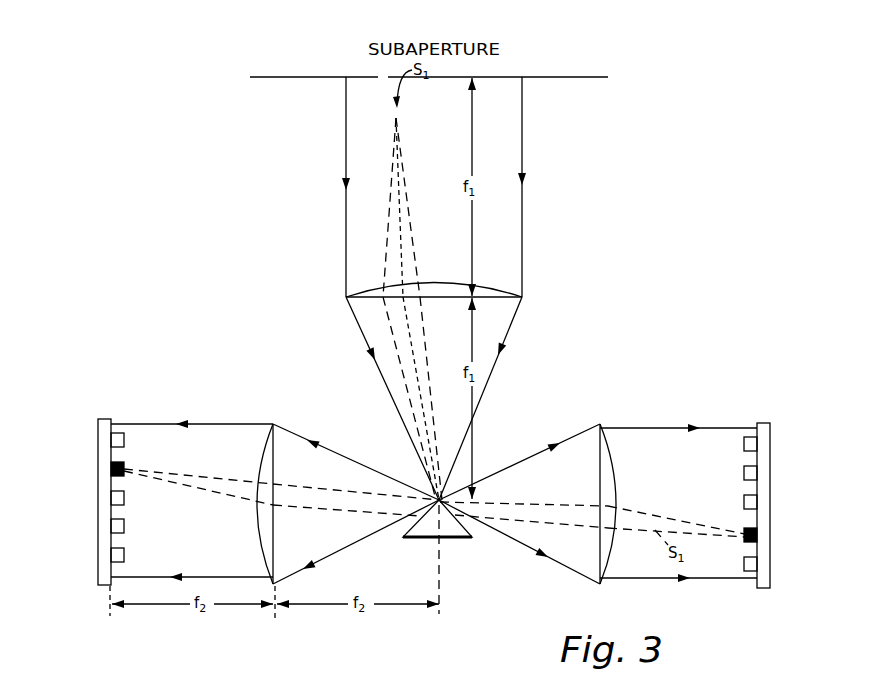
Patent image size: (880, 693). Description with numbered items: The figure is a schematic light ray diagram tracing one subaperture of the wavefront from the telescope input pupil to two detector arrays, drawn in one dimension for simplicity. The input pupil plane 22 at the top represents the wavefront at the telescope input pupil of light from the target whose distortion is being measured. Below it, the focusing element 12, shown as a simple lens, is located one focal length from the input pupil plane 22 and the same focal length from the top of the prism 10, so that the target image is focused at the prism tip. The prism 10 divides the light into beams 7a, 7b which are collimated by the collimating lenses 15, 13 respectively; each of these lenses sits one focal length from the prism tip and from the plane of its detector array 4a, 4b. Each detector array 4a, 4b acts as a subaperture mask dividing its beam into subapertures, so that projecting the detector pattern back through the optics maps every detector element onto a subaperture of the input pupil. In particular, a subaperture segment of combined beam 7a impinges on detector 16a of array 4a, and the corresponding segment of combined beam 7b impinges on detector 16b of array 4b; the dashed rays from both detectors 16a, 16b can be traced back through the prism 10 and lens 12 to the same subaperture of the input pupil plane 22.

The input pupil plane 22 is at (555, 79).
The focusing element 12 is at (505, 292).
The prism 10 is at (460, 538).
The combined beam 7a is at (535, 459).
The combined beam 7b is at (322, 447).
The collimating lens 13 is at (276, 460).
The collimating lens 15 is at (613, 458).
The detector array 4a is at (756, 501).
The detector array 4b is at (167, 506).
The detector 16a is at (782, 512).
The detector 16b is at (110, 466).